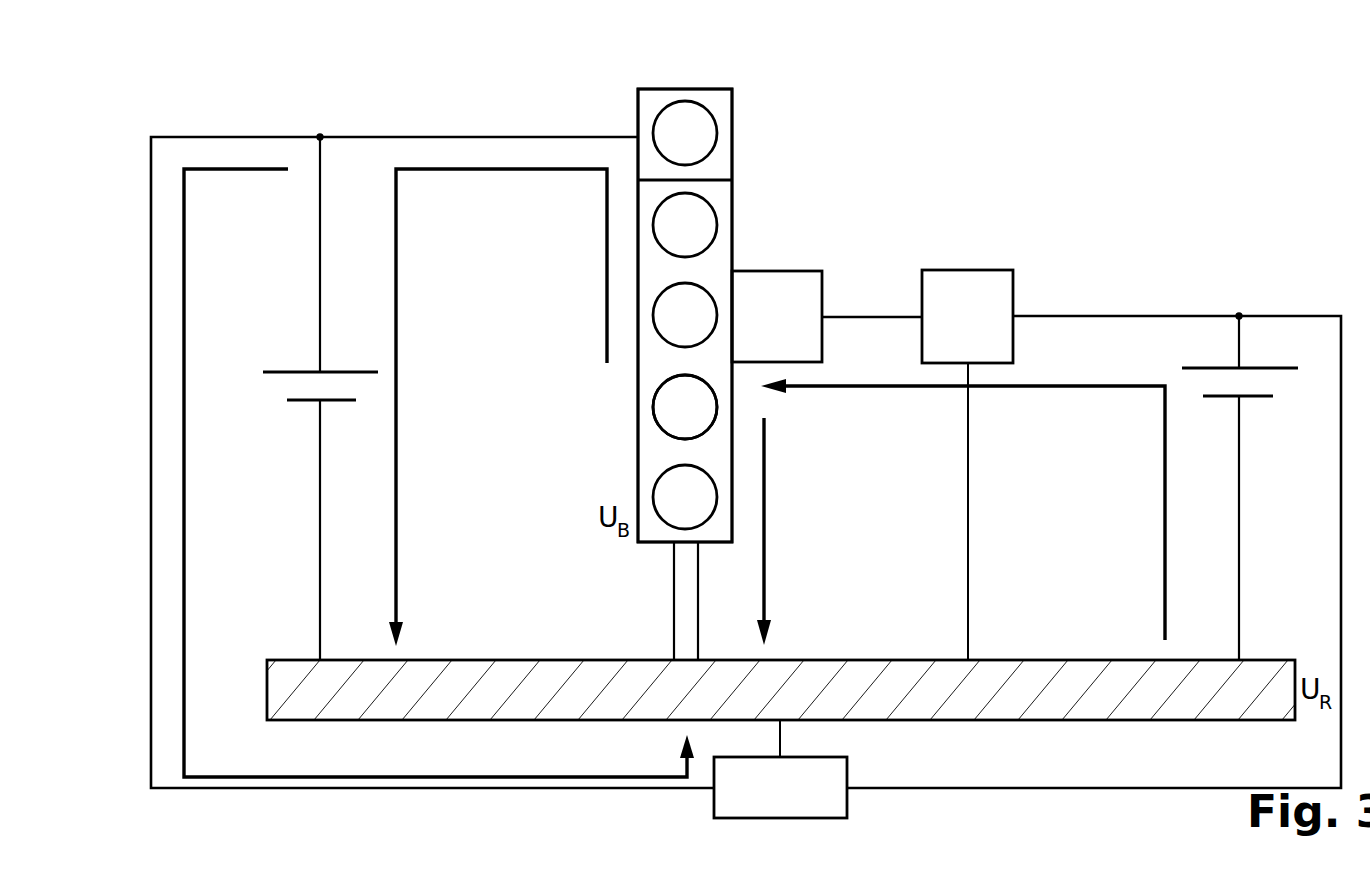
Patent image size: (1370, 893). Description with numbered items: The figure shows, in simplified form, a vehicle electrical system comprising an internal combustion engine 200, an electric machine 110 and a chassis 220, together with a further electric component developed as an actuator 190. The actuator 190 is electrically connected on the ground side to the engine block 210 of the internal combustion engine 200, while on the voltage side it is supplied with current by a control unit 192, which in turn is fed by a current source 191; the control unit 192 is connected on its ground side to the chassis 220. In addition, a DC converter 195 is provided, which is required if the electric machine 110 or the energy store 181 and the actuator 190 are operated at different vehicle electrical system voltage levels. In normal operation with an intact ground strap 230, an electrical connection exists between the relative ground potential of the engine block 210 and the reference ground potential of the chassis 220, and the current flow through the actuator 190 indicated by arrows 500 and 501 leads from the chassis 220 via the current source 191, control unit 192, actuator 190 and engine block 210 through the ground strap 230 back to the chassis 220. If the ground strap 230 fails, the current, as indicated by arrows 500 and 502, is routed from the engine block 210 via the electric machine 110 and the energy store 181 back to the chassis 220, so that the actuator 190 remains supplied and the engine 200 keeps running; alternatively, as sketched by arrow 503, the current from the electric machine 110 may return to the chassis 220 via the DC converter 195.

The electric machine 110 is at (636, 97).
The energy store 181 is at (266, 372).
The actuator 190 is at (772, 271).
The current source 191 is at (1280, 368).
The control unit 192 is at (964, 270).
The DC converter 195 is at (847, 773).
The internal combustion engine 200 is at (628, 390).
The engine block 210 is at (636, 420).
The chassis 220 is at (267, 691).
The ground strap 230 is at (674, 601).
The arrow 500 is at (1164, 511).
The arrow 501 is at (766, 519).
The arrow 502 is at (398, 426).
The arrow 503 is at (186, 521).